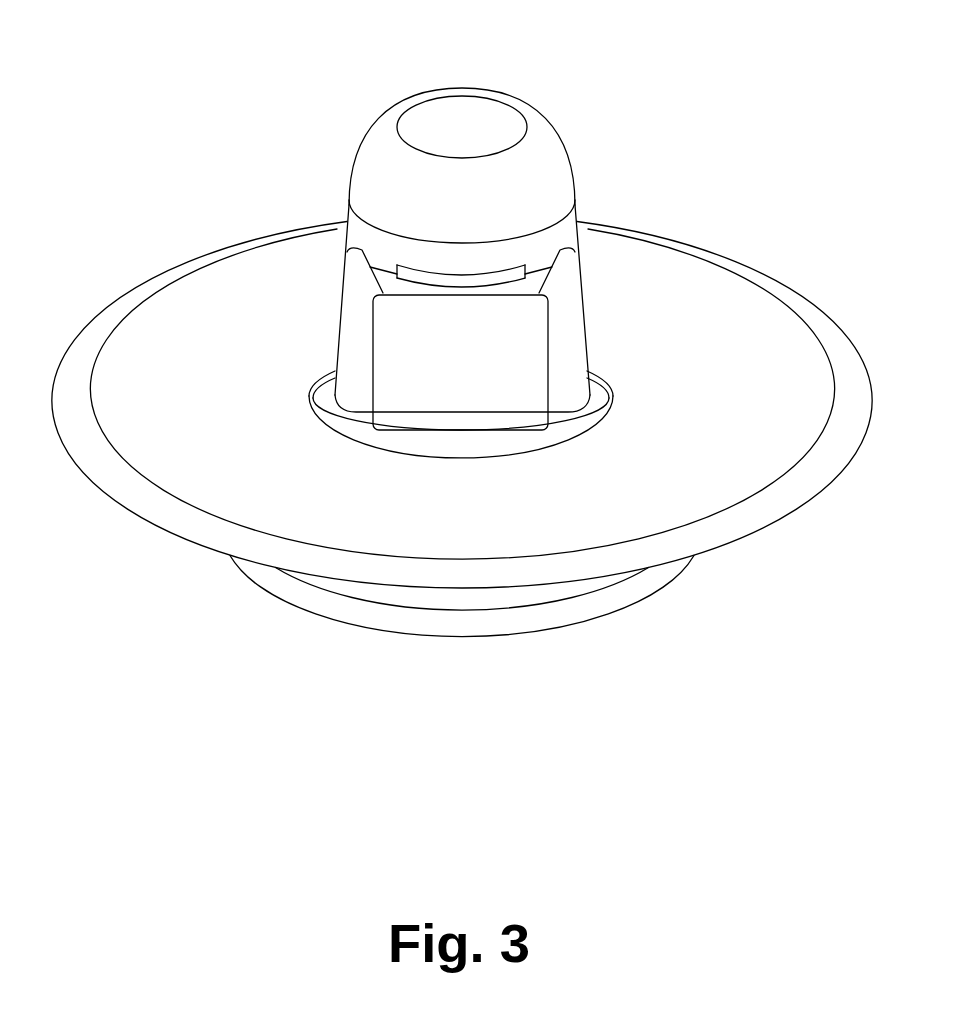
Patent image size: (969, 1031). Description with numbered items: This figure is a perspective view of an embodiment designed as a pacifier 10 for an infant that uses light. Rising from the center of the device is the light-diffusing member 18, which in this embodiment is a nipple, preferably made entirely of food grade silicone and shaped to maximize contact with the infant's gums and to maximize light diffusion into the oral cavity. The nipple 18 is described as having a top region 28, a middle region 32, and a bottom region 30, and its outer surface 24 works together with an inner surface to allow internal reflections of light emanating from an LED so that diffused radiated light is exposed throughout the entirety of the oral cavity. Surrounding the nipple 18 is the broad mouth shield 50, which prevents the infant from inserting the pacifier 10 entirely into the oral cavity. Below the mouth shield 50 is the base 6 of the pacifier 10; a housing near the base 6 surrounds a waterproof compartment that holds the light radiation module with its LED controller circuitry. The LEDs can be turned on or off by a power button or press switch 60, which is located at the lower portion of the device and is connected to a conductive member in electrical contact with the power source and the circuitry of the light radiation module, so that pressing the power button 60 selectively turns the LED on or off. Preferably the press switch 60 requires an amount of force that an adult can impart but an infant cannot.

The pacifier 10 is at (345, 95).
The light-diffusing member 18 is at (586, 173).
The top region 28 is at (431, 123).
The outer surface 24 is at (346, 212).
The middle region 32 is at (586, 234).
The bottom region 30 is at (323, 363).
The mouth shield 50 is at (767, 330).
The base 6 is at (268, 581).
The press switch 60 is at (602, 617).